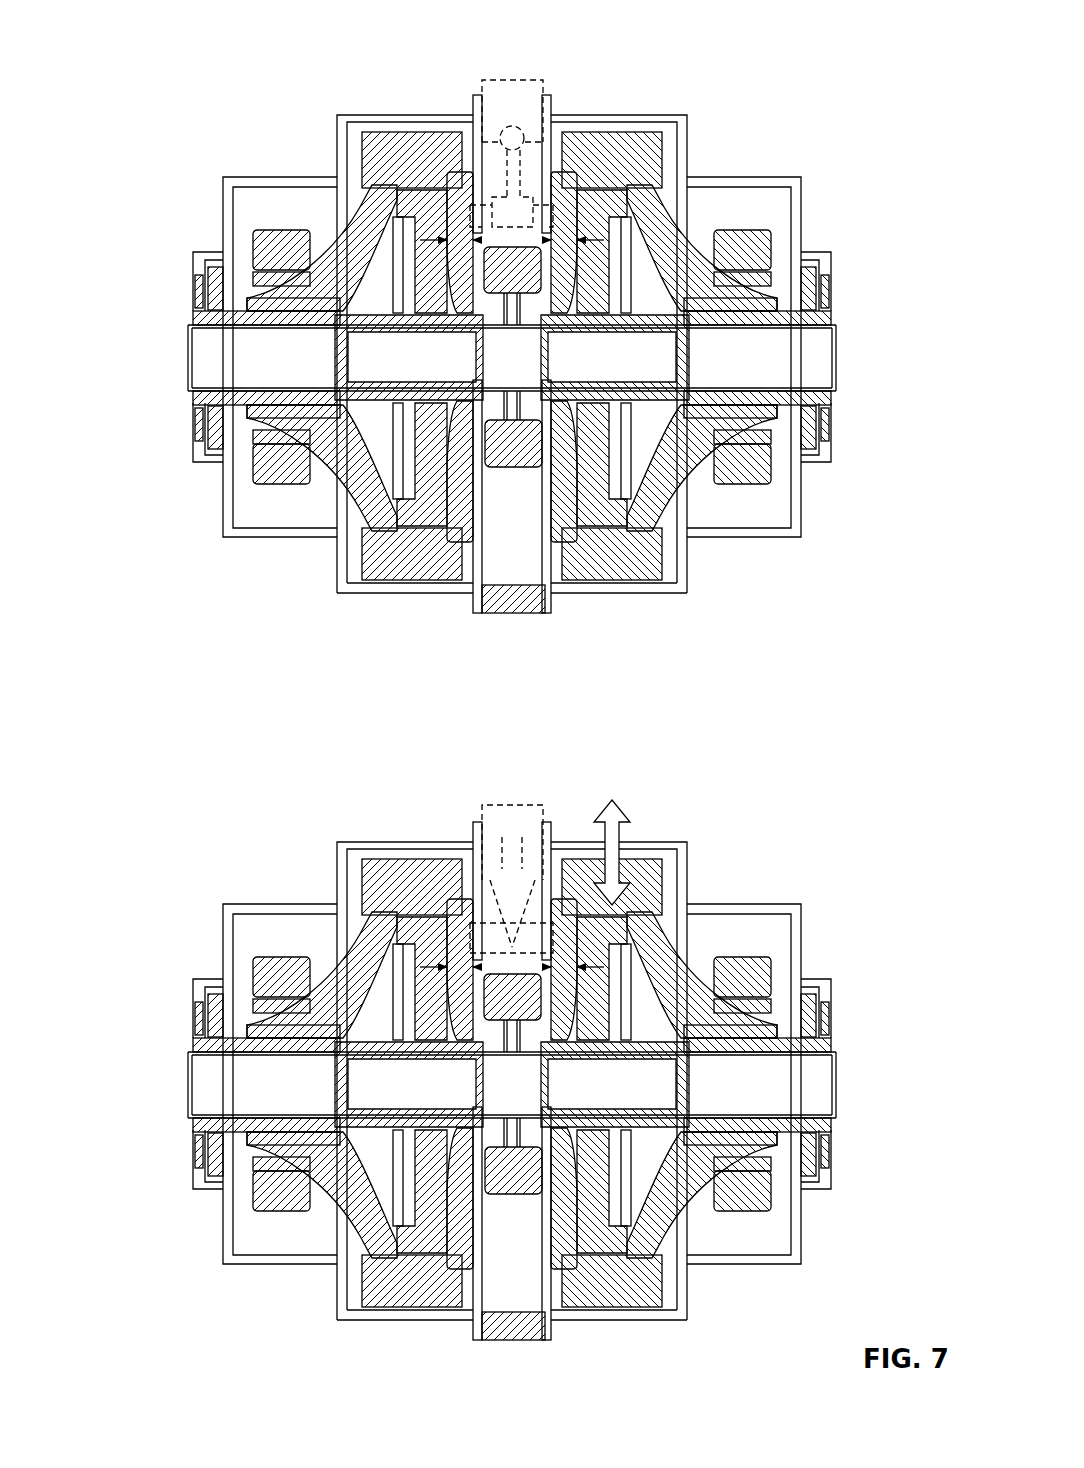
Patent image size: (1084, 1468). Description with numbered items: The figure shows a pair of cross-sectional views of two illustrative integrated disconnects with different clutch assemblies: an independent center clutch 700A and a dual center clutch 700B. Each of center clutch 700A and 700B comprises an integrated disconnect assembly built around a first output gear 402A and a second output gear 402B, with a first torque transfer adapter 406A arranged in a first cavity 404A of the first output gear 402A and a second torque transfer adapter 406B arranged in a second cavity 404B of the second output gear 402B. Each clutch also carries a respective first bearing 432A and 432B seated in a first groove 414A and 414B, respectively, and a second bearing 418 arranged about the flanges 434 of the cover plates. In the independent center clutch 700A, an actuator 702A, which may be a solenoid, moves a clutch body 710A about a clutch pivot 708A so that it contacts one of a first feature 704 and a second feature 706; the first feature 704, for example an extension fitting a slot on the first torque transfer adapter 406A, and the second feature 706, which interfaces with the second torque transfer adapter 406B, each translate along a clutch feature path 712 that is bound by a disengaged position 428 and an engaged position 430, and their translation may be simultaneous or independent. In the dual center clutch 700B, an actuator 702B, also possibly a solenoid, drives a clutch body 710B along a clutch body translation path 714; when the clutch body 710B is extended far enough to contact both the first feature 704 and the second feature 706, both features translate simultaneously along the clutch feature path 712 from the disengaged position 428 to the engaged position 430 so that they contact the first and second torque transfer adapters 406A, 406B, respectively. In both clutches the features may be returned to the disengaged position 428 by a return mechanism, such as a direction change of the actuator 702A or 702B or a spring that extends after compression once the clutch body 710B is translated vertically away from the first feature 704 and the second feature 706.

The independent center clutch 700A is at (158, 50).
The dual center clutch 700B is at (158, 747).
The actuator 702A is at (514, 110).
The actuator 702B is at (515, 835).
The first feature 704 is at (430, 192).
The second feature 706 is at (600, 188).
The clutch pivot 708A is at (524, 130).
The clutch body 710A is at (520, 138).
The clutch body 710B is at (525, 865).
The clutch feature path 712 is at (420, 240).
The clutch body translation path 714 is at (627, 808).
The second bearing 418 is at (513, 445).
The disengaged position 428 is at (457, 172).
The engaged position 430 is at (390, 188).
The flanges 434 is at (487, 326).
The first output gear 402A is at (398, 470).
The second output gear 402B is at (626, 470).
The first cavity 404A is at (353, 432).
The second cavity 404B is at (671, 432).
The first torque transfer adapter 406A is at (430, 505).
The second torque transfer adapter 406B is at (600, 500).
The first groove 414A is at (207, 442).
The first groove 414B is at (815, 442).
The first bearing 432A is at (212, 282).
The first bearing 432B is at (812, 282).